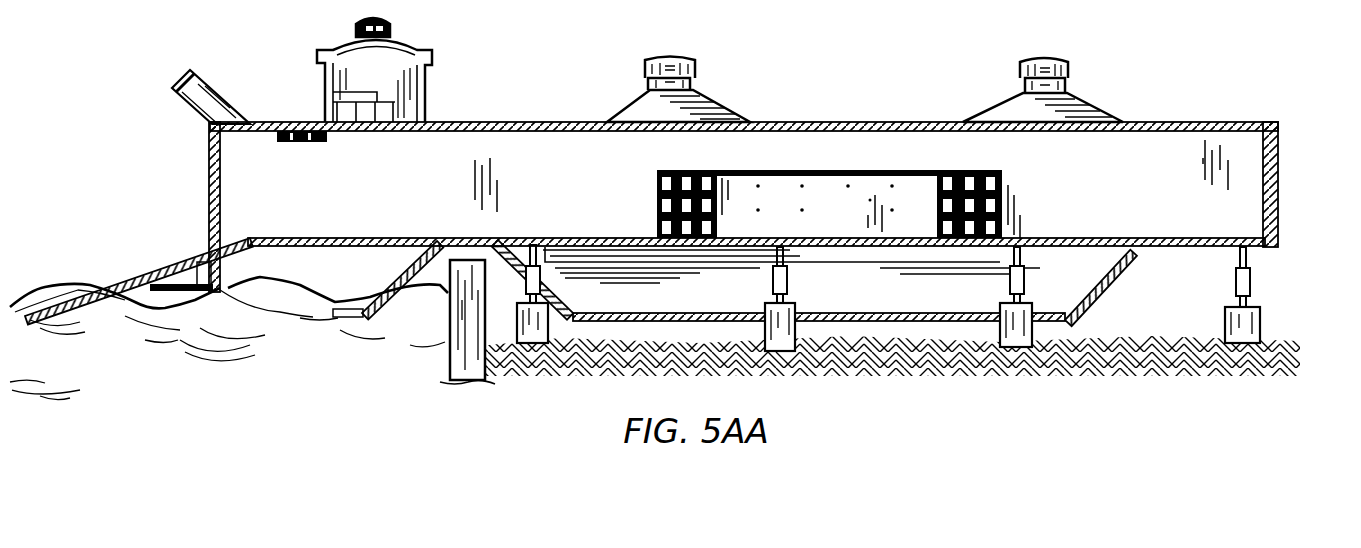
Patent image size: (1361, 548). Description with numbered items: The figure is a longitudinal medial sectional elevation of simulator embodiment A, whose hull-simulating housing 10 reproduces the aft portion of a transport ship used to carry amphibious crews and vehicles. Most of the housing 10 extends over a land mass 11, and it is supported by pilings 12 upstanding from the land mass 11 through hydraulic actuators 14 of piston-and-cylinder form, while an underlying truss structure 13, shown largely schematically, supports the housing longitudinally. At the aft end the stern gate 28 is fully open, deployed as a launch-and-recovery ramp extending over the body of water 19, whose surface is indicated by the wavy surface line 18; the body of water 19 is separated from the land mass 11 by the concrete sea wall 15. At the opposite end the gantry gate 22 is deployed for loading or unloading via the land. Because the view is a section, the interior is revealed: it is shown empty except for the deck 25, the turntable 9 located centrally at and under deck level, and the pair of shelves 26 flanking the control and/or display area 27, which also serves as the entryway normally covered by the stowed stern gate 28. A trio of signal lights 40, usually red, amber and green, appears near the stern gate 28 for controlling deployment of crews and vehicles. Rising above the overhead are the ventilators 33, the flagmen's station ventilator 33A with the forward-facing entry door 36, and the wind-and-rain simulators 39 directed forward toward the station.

The turntable 9 is at (680, 262).
The housing 10 is at (496, 114).
The land mass 11 is at (1044, 410).
The pilings 12 is at (770, 325).
The truss structure 13 is at (313, 318).
The hydraulic actuators 14 is at (787, 290).
The sea wall 15 is at (448, 332).
The wavy surface line 18 is at (78, 288).
The body of water 19 is at (356, 397).
The gantry gate 22 is at (1284, 200).
The deck 25 is at (366, 237).
The shelves 26 is at (660, 172).
The control and/or display area 27 is at (812, 233).
The stern gate 28 is at (160, 266).
The ventilators 33 is at (683, 60).
The ventilator 33A is at (356, 28).
The entry door 36 is at (433, 97).
The wind-and-rain simulators 39 is at (176, 80).
The signal lights 40 is at (295, 142).
The simulator embodiment A is at (226, 64).